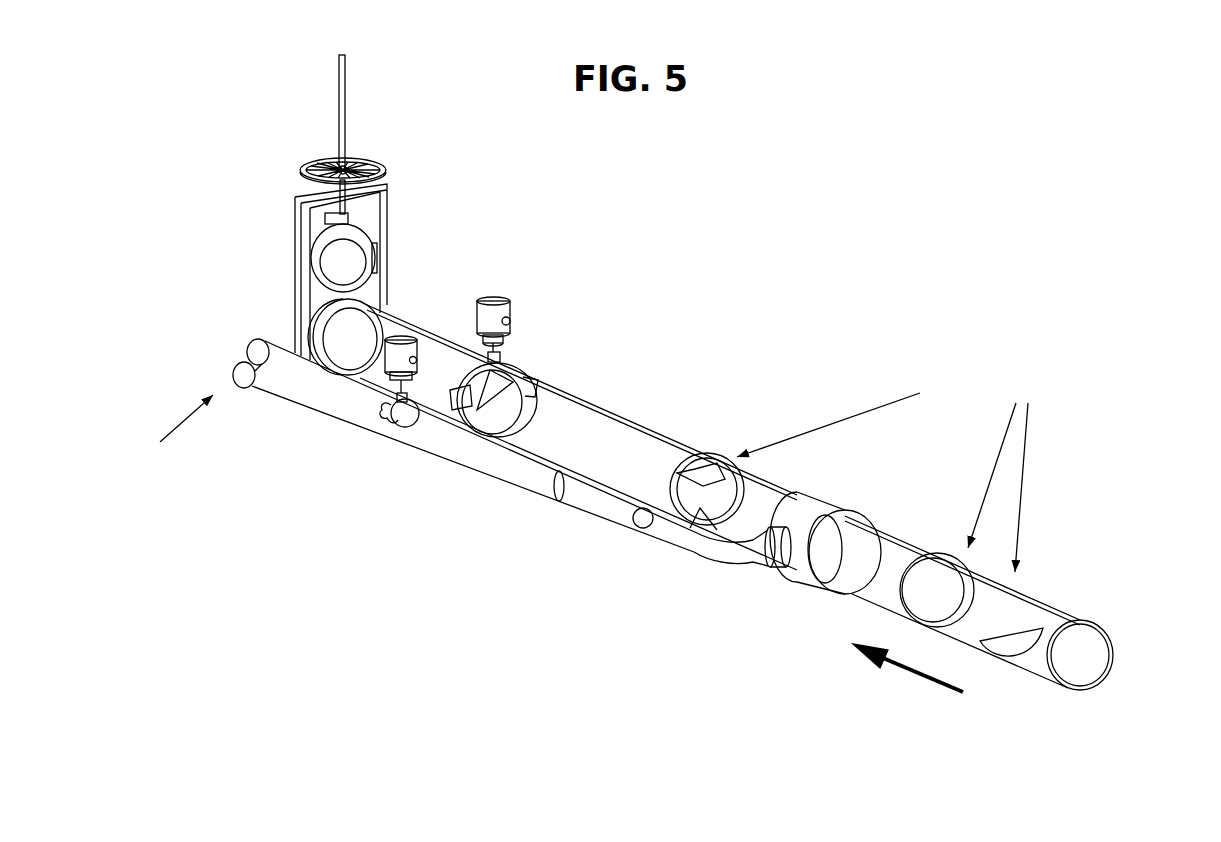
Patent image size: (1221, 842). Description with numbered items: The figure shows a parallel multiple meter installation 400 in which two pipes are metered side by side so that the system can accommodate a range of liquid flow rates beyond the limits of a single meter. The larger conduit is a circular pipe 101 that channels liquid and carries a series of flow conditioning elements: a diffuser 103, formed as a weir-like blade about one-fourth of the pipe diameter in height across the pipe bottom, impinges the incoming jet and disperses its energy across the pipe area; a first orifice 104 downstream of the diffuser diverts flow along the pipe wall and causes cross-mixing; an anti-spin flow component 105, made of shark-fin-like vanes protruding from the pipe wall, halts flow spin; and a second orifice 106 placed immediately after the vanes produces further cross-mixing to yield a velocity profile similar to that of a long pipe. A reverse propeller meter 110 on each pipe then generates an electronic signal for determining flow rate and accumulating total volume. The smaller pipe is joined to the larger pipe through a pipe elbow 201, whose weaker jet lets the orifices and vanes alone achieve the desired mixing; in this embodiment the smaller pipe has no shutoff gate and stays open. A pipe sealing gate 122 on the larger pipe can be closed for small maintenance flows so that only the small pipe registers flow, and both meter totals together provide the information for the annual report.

The parallel multiple meter installation 400 is at (960, 742).
The pipe sealing gate 122 is at (403, 182).
The pipe 101 is at (610, 404).
The reverse propeller meter 110 is at (527, 307).
The second orifice 106 is at (698, 448).
The first orifice 104 is at (925, 555).
The anti-spin flow component 105 is at (700, 515).
The diffuser 103 is at (1008, 640).
The pipe elbow 201 is at (727, 568).